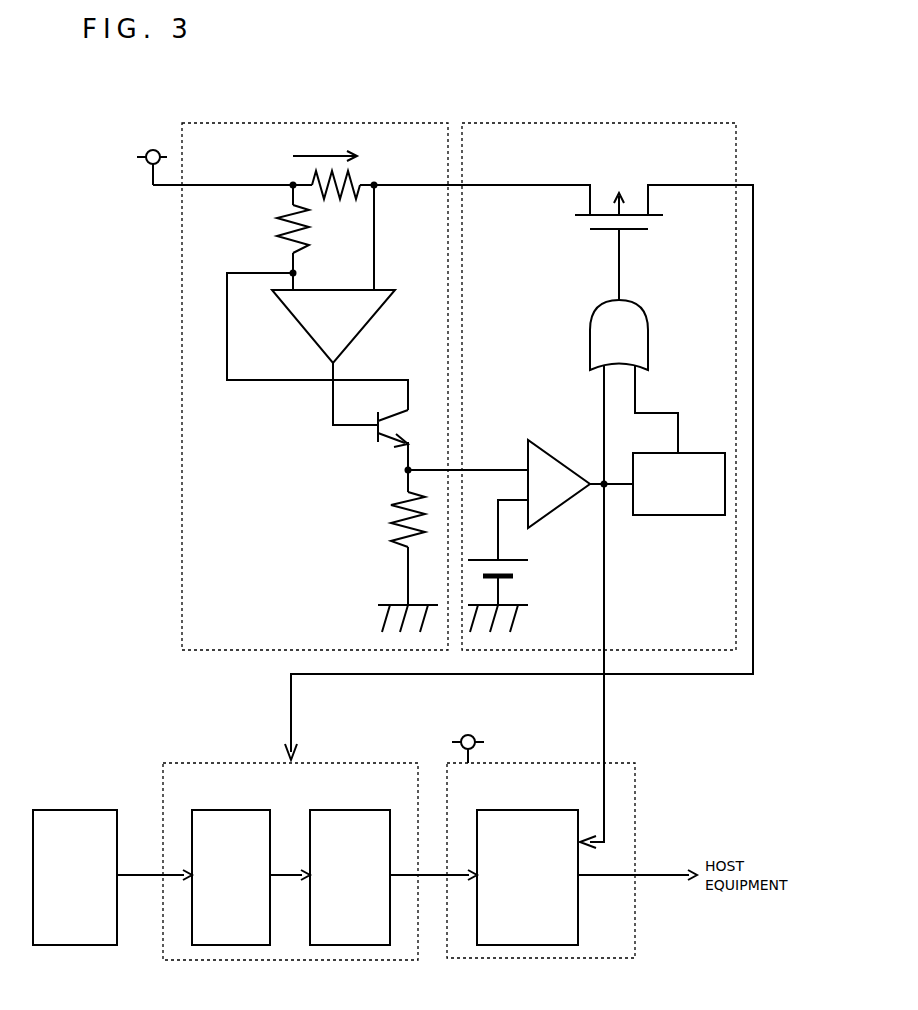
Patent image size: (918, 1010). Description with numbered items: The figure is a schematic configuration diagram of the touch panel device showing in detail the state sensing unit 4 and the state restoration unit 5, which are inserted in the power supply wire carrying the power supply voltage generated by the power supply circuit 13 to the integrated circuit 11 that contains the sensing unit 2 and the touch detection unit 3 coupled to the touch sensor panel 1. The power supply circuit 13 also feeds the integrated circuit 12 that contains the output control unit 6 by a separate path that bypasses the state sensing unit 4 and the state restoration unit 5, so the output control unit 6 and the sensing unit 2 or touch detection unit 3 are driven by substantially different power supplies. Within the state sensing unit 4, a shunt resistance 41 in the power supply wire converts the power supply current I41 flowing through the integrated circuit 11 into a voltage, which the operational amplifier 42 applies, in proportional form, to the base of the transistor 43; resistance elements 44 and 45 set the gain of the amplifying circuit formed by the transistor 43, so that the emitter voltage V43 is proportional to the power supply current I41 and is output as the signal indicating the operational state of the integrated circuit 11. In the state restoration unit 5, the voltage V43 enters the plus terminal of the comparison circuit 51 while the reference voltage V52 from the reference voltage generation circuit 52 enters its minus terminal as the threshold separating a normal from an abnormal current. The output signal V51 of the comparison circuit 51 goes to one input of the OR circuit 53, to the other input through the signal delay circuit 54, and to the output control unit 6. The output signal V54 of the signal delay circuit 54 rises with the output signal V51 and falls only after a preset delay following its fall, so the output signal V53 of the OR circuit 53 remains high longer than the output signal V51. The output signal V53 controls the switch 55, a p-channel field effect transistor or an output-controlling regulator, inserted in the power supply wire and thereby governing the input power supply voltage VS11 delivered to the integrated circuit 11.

The touch sensor panel 1 is at (113, 810).
The sensing unit 2 is at (268, 810).
The touch detection unit 3 is at (385, 810).
The state sensing unit 4 is at (318, 123).
The state restoration unit 5 is at (603, 123).
The output control unit 6 is at (575, 810).
The integrated circuit 11 is at (405, 763).
The integrated circuit 12 is at (620, 763).
The power supply circuit 13 is at (153, 150).
The shunt resistance 41 is at (360, 170).
The operational amplifier 42 is at (385, 289).
The transistor 43 is at (373, 437).
The resistance element 44 is at (303, 251).
The resistance element 45 is at (403, 490).
The comparison circuit 51 is at (555, 458).
The reference voltage generation circuit 52 is at (520, 560).
The OR circuit 53 is at (650, 340).
The signal delay circuit 54 is at (695, 453).
The switch 55 is at (620, 190).
The power supply current I41 is at (322, 155).
The emitter voltage V43 is at (409, 444).
The output signal of the comparison circuit V51 is at (603, 390).
The reference voltage V52 is at (497, 535).
The output signal of the OR circuit V53 is at (622, 268).
The output signal of the signal delay circuit V54 is at (636, 390).
The input power supply voltage VS11 is at (748, 183).